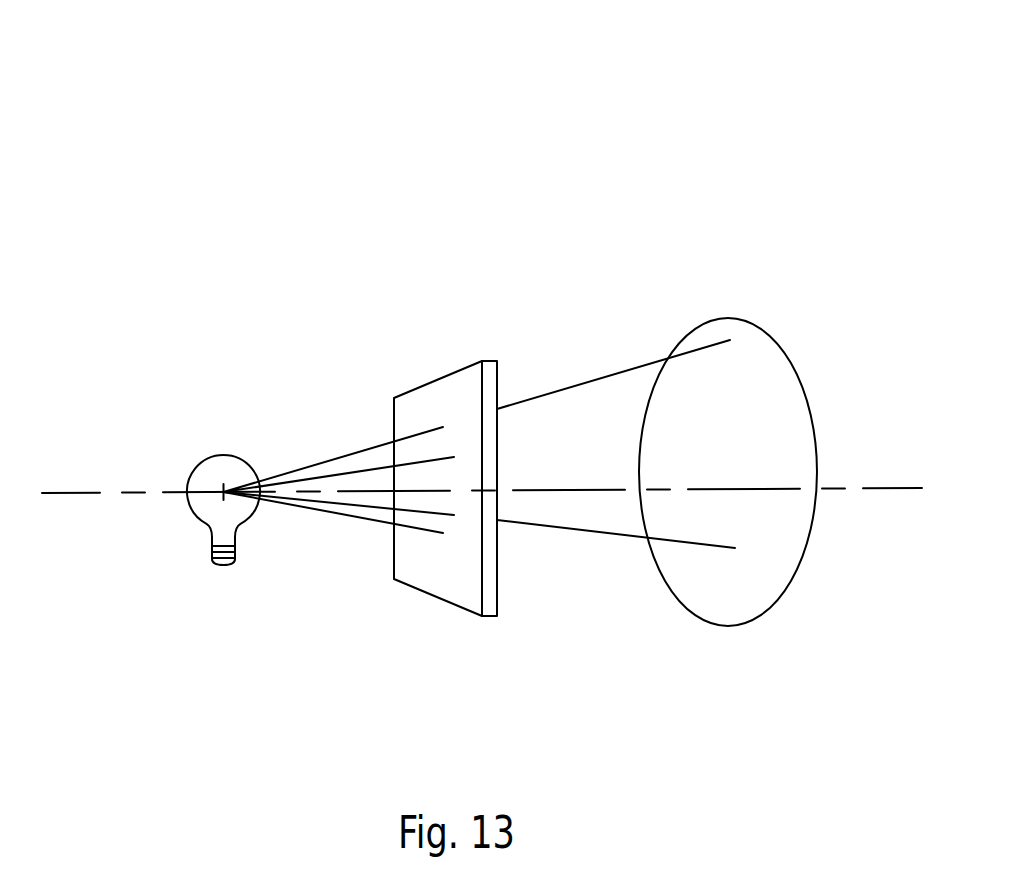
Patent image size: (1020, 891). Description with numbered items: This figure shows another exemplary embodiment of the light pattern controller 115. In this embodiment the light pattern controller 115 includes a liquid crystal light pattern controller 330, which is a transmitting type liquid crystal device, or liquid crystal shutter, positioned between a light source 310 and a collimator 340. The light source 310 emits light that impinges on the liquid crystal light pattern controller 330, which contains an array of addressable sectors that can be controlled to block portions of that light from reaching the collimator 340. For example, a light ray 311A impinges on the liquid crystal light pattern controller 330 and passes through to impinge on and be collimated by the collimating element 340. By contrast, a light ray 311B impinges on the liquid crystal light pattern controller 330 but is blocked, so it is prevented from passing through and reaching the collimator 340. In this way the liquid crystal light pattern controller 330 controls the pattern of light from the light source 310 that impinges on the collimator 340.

The light pattern controller 115 is at (593, 95).
The light source 310 is at (216, 455).
The light ray 311A is at (610, 373).
The light ray 311B is at (360, 520).
The liquid crystal light pattern controller 330 is at (460, 390).
The collimator 340 is at (777, 387).